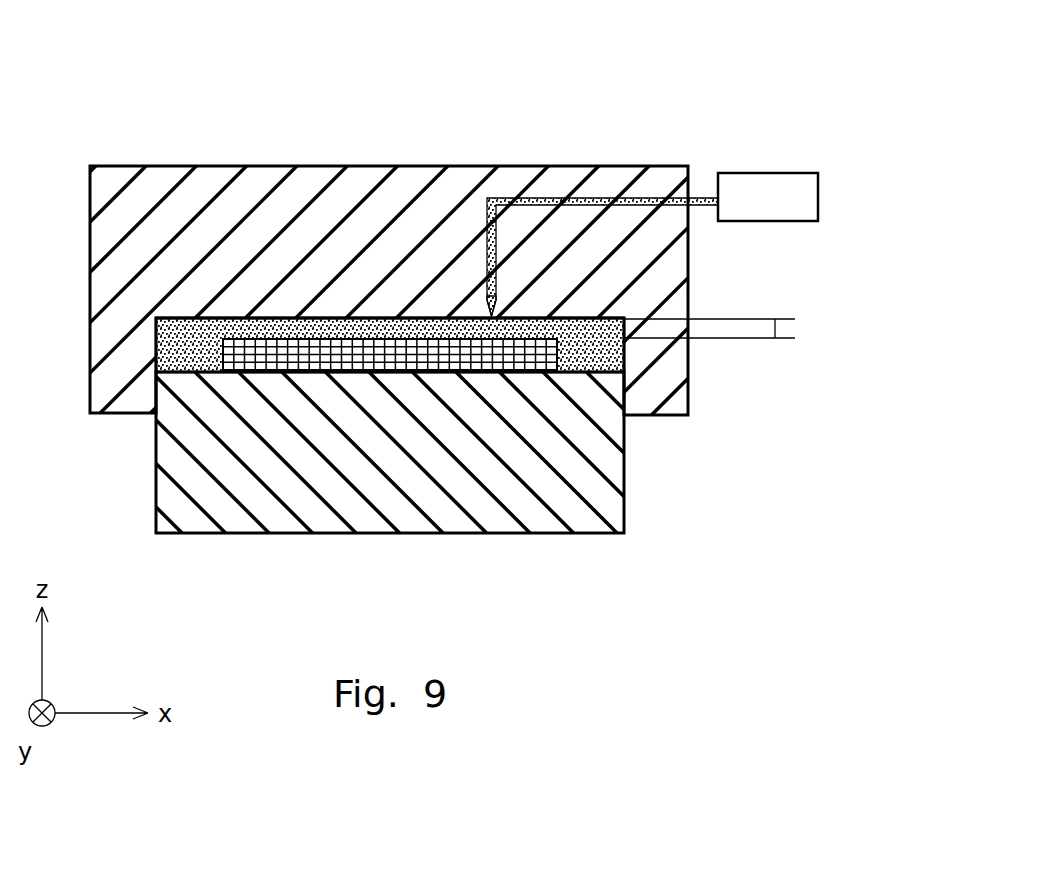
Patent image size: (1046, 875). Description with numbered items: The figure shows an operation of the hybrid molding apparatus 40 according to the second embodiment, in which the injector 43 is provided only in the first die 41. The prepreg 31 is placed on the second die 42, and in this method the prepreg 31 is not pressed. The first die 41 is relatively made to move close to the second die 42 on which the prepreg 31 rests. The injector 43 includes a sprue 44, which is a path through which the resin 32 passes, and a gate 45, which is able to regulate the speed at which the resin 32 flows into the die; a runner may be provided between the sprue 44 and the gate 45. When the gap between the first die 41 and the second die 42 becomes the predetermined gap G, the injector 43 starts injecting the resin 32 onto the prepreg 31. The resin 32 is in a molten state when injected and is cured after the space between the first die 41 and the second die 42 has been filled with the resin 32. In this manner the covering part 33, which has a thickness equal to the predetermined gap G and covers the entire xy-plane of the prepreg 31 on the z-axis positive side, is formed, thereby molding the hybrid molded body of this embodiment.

The hybrid molding apparatus 40 is at (823, 106).
The first die 41 is at (172, 190).
The second die 42 is at (600, 496).
The injector 43 is at (768, 197).
The sprue 44 is at (603, 195).
The gate 45 is at (493, 307).
The prepreg 31 is at (390, 355).
The resin 32 is at (593, 360).
The covering part 33 is at (383, 318).
The predetermined gap G is at (777, 327).